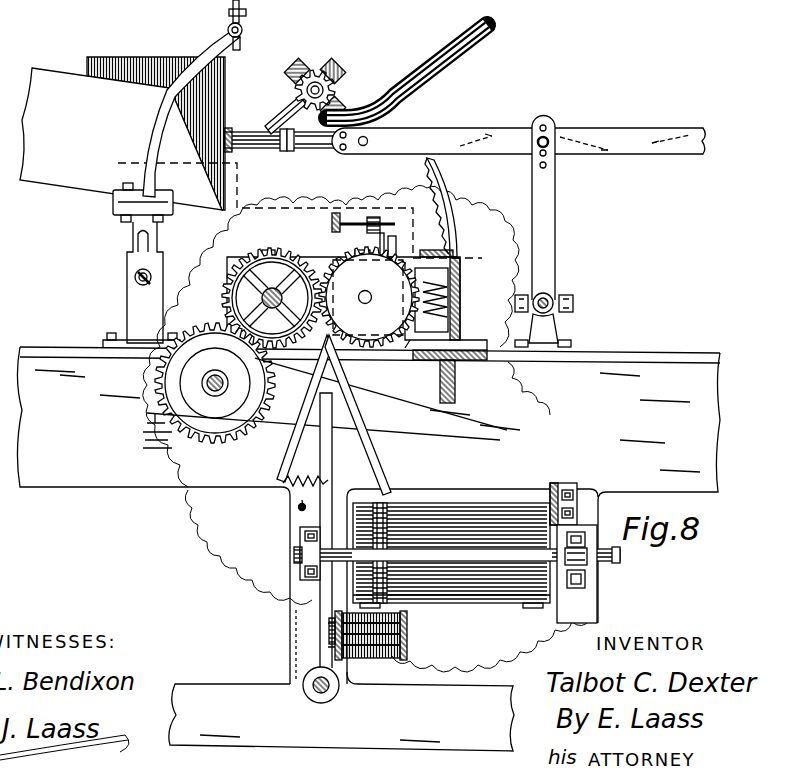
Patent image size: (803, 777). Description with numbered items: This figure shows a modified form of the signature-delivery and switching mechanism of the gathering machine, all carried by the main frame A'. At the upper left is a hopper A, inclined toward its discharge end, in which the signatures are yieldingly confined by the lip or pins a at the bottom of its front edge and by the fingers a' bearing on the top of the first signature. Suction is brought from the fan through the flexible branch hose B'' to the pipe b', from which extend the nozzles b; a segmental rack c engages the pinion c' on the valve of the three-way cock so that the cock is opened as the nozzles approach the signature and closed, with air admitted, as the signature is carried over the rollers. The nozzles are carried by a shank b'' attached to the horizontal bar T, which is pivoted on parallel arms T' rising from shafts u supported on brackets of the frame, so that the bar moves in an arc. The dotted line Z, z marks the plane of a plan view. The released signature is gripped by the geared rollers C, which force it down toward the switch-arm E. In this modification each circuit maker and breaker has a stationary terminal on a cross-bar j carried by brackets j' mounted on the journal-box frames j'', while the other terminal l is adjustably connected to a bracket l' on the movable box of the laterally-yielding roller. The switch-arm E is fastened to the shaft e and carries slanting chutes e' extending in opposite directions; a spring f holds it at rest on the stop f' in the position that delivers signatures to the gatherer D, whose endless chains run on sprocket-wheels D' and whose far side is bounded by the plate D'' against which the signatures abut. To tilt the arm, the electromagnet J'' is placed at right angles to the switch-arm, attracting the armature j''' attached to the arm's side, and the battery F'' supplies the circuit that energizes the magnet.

The hopper A is at (122, 133).
The main frame A' is at (368, 549).
The section line Z Z is at (255, 204).
The section line Z Z z is at (454, 256).
The lip or pins a is at (179, 262).
The fingers a' is at (201, 98).
The nozzle b is at (257, 152).
The pipe b' is at (278, 115).
The shank b'' is at (307, 158).
The segmental rack c is at (430, 207).
The pinion c' is at (304, 89).
The branch hose B'' is at (407, 71).
The horizontal bar T is at (518, 129).
The parallel arm T' is at (563, 215).
The shaft u is at (561, 313).
The cross-bar j is at (357, 293).
The bracket j' is at (322, 227).
The journal-box frame j'' is at (450, 318).
The armature j''' is at (292, 635).
The terminal l is at (393, 259).
The bracket l' is at (422, 243).
The roller C is at (320, 286).
The battery F'' is at (191, 390).
The slanting chute e' is at (327, 409).
The switch-arm E is at (313, 600).
The shaft e is at (314, 702).
The spring f is at (305, 468).
The stop f' is at (282, 518).
The gatherer D is at (460, 541).
The sprocket-wheel D' is at (451, 620).
The plate D'' is at (445, 542).
The electromagnet J'' is at (367, 647).